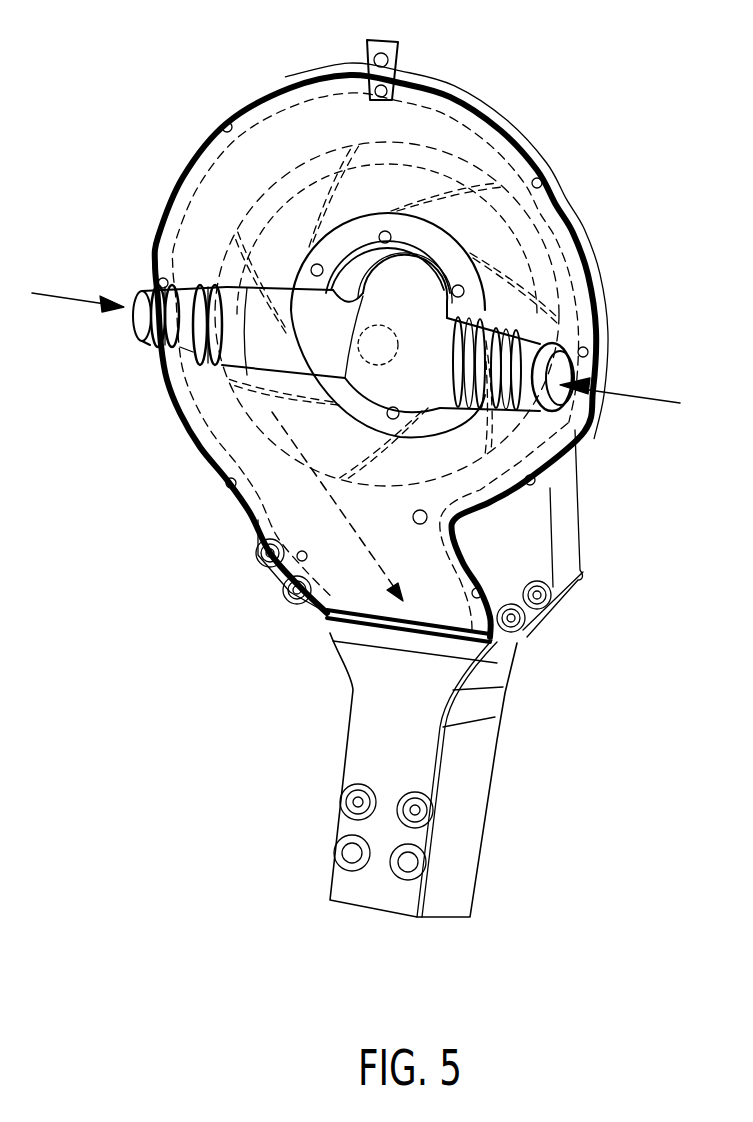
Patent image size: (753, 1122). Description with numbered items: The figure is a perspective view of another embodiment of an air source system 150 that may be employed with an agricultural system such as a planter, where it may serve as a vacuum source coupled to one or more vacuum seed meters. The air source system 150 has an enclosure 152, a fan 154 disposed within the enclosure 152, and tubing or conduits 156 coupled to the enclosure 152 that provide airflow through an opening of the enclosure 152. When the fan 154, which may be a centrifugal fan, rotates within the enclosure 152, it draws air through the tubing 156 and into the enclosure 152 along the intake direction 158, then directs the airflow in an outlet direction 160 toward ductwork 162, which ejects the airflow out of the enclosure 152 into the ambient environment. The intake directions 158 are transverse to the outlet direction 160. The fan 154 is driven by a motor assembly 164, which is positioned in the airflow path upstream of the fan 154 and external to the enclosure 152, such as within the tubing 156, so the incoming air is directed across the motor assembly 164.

The air source system 150 is at (578, 142).
The enclosure 152 is at (213, 130).
The fan 154 is at (270, 203).
The tubing or conduits 156 is at (546, 262).
The intake direction 158 is at (72, 285).
The outlet direction 160 is at (331, 502).
The ductwork 162 is at (357, 663).
The motor assembly 164 is at (330, 262).